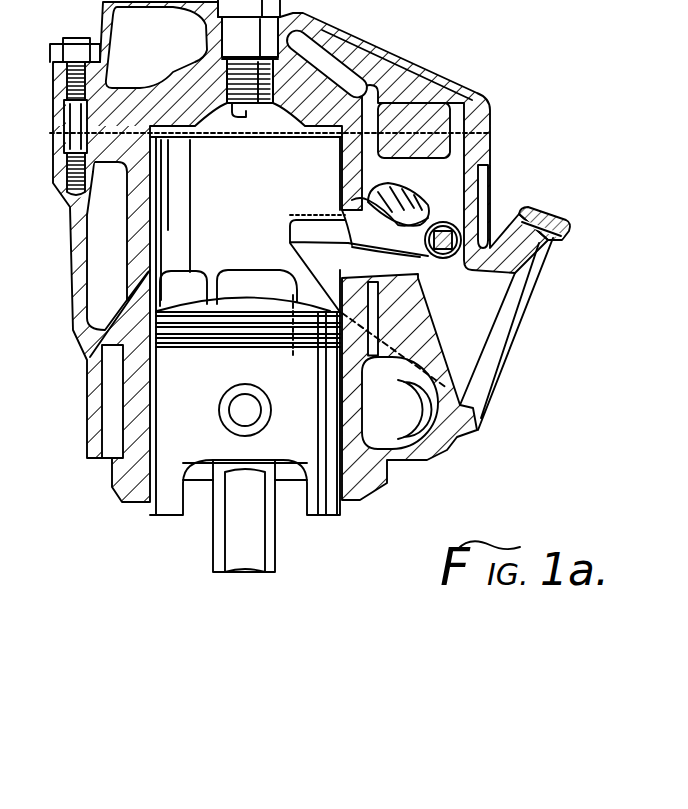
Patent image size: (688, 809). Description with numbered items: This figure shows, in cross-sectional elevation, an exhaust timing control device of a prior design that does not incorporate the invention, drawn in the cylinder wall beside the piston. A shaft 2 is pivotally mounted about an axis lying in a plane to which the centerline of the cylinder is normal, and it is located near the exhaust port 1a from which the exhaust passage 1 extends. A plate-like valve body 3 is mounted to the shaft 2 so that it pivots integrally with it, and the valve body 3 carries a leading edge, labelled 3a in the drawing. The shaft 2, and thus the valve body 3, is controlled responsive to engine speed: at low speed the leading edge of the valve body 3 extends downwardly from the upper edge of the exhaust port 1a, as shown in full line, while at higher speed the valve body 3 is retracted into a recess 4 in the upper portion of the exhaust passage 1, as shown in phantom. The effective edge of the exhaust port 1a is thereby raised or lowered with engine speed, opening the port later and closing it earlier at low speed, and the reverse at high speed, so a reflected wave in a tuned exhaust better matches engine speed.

The exhaust passage 1 is at (490, 327).
The exhaust port 1a is at (290, 243).
The shaft 2 is at (448, 258).
The valve body 3 is at (423, 256).
The rocker arm contact face 3a is at (340, 248).
The recess 4 is at (400, 223).